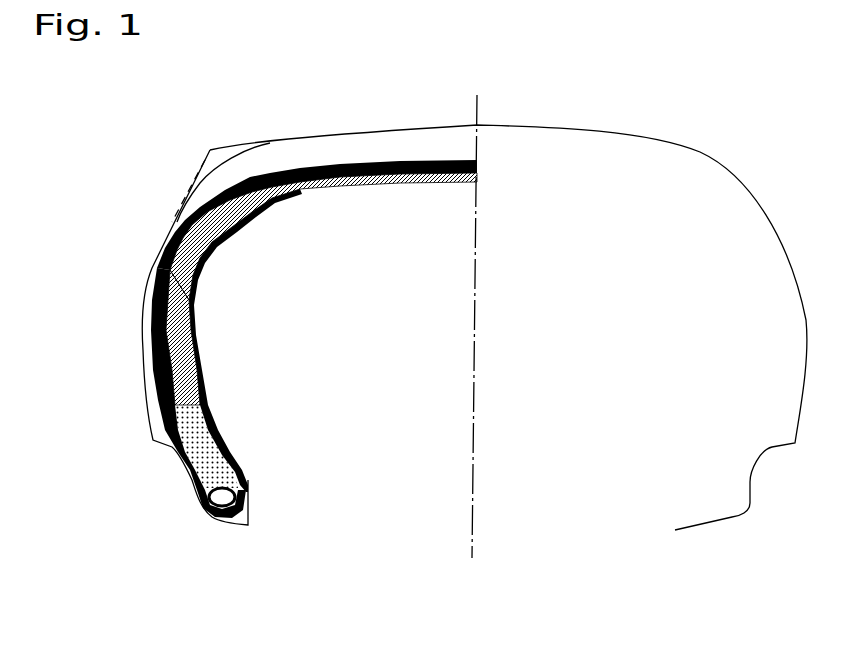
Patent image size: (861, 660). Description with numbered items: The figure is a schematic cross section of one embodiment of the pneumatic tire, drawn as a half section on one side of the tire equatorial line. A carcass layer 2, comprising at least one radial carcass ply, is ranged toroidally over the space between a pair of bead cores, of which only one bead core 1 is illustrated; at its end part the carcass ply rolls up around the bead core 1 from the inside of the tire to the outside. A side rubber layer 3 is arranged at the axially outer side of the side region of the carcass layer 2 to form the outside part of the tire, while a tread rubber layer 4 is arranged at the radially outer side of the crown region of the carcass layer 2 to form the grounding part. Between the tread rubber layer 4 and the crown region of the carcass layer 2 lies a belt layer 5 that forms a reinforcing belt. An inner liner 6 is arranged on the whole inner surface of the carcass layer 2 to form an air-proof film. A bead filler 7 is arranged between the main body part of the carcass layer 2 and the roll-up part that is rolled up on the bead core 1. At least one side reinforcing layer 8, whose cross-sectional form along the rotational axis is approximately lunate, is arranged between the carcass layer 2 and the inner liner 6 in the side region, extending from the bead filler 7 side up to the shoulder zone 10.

The bead core 1 is at (246, 486).
The carcass layer 2 is at (232, 459).
The side rubber layer 3 is at (156, 273).
The tread rubber layer 4 is at (272, 150).
The belt layer 5 is at (364, 162).
The inner liner 6 is at (195, 365).
The bead filler 7 is at (240, 458).
The side reinforcing layer 8 is at (197, 292).
The shoulder zone 10 is at (223, 240).